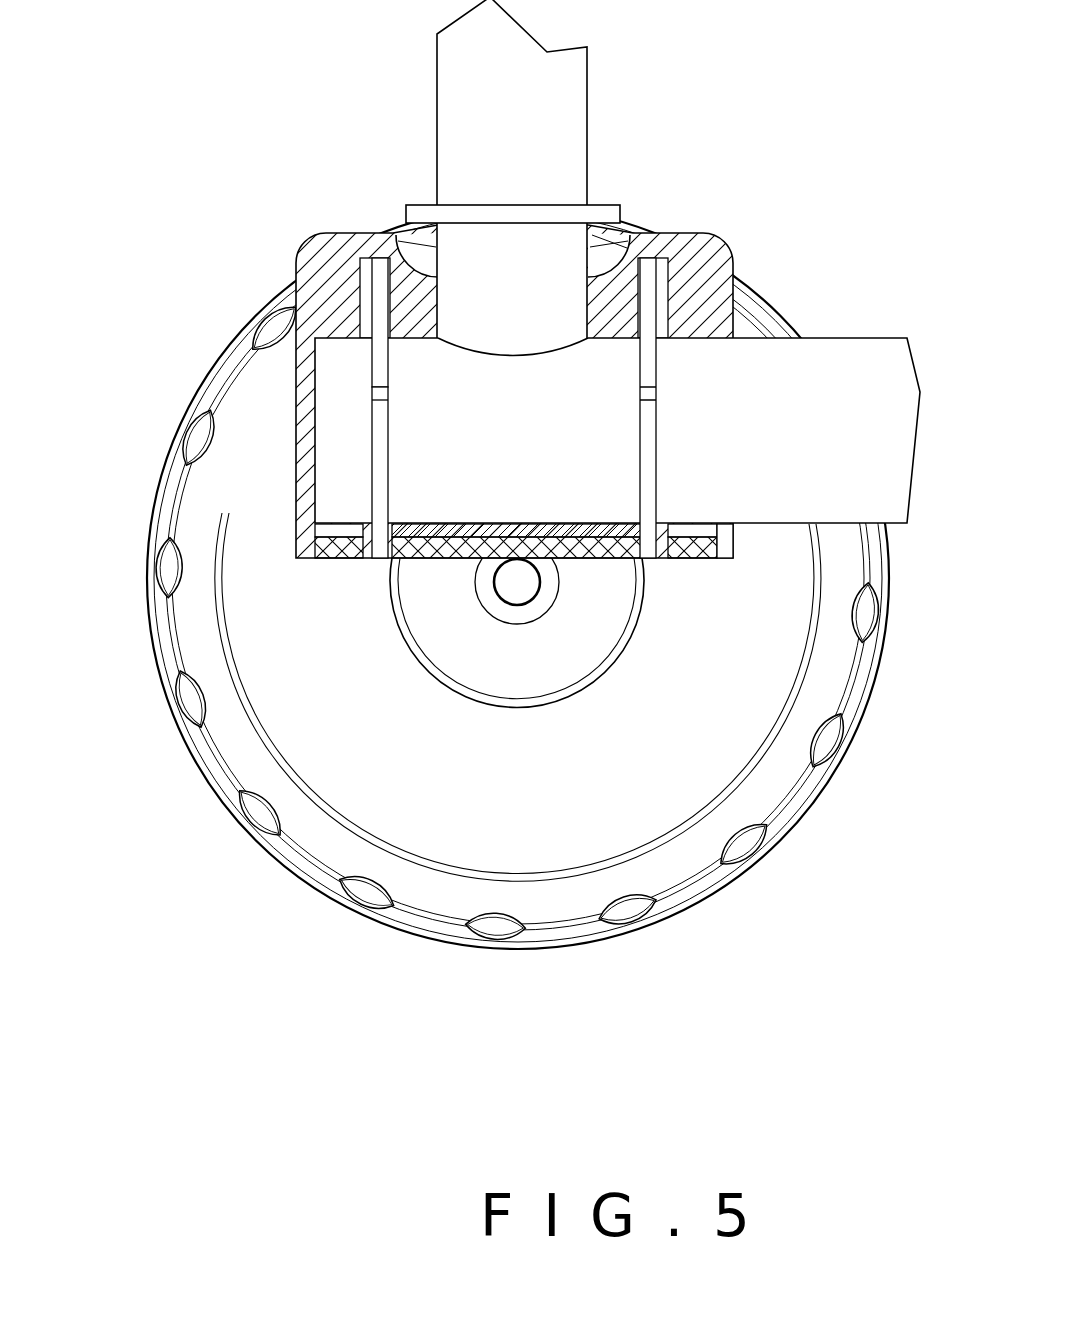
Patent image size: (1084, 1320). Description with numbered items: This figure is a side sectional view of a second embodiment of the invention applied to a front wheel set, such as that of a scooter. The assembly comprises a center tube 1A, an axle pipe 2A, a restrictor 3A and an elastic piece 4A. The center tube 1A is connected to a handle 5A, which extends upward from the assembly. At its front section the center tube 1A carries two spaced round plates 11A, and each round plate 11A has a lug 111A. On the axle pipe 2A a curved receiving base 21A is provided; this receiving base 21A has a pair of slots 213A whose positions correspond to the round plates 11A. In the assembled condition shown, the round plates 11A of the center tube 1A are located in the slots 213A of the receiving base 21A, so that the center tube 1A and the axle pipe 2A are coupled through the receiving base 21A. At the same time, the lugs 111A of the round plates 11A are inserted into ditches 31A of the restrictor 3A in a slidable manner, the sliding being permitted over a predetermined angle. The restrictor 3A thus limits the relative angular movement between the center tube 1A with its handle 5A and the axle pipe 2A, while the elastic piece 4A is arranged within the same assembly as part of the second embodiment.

The center tube 1A is at (855, 360).
The axle pipe 2A is at (543, 668).
The restrictor 3A is at (708, 265).
The elastic piece 4A is at (394, 560).
The handle 5A is at (540, 145).
The round plate 11A is at (385, 470).
The receiving base 21A is at (448, 548).
The ditch 31A is at (362, 322).
The lug 111A is at (382, 315).
The slot 213A is at (655, 560).